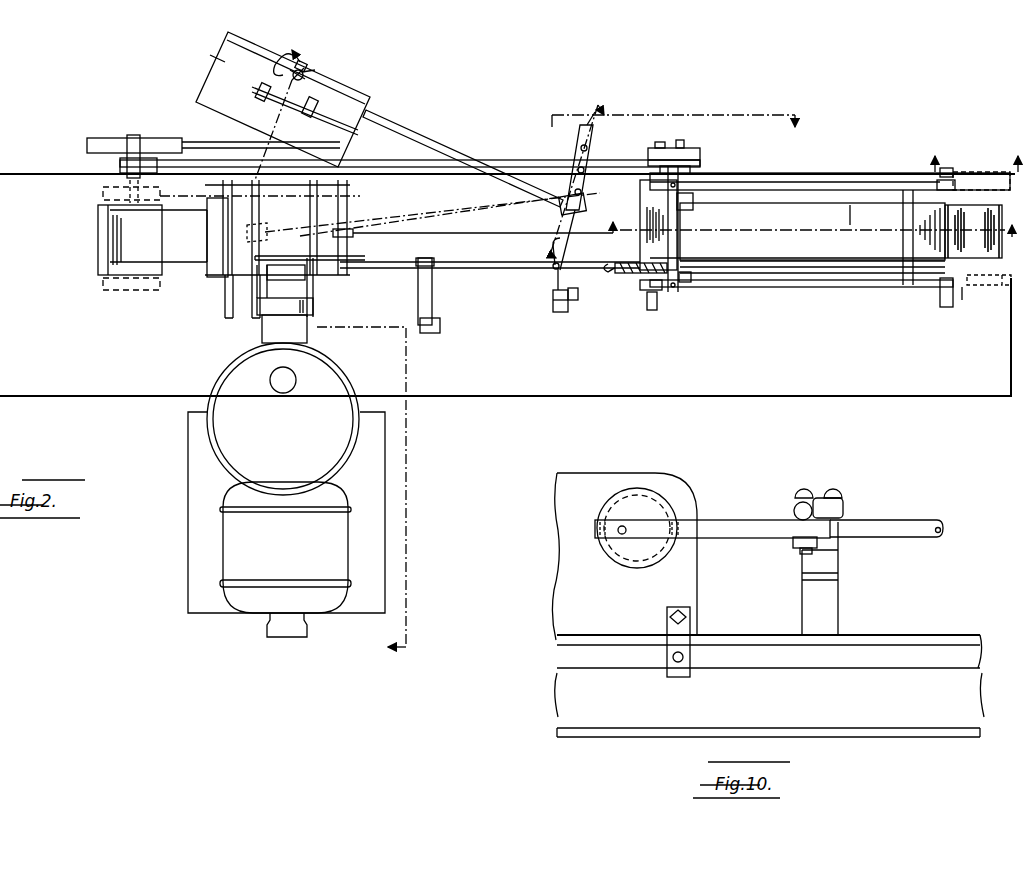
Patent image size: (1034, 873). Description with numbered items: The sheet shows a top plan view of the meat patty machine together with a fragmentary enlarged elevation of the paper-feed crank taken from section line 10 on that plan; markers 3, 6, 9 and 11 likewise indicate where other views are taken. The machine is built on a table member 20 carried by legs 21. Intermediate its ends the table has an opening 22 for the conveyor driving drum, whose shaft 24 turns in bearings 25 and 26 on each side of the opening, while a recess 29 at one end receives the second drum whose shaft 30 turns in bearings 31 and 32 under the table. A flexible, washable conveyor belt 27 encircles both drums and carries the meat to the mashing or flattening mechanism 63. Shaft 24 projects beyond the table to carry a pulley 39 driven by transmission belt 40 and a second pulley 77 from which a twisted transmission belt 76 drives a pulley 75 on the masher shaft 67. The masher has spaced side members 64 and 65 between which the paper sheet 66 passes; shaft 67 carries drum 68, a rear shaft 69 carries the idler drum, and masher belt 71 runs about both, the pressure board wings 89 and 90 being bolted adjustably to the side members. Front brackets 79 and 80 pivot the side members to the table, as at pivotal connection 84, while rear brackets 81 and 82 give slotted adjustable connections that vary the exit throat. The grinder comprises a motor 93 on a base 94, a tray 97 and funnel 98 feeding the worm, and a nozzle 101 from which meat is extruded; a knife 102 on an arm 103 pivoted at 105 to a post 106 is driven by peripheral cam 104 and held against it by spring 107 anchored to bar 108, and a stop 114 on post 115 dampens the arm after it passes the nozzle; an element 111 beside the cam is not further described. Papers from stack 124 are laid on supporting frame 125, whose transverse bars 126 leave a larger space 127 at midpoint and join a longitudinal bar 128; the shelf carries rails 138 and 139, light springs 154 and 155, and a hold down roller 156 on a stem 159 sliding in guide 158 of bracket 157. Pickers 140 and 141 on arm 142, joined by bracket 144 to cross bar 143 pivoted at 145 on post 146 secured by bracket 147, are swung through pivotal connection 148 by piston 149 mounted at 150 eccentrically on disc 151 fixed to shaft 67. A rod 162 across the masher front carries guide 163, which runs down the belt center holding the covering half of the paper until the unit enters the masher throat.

In FIG. 2, the section line 3- 3 is at (358, 348).
In FIG. 2, the section line 6- 6 is at (811, 238).
In FIG. 2, the section line 9- 9 is at (974, 154).
In FIG. 2, the section line 10— 10 is at (670, 109).
In FIG. 2, the section line 11- 11 is at (572, 181).
In FIG. 2, the table member 20 is at (700, 388).
In FIG. 10, the table member 20 is at (818, 668).
In FIG. 10, the legs 21 is at (912, 712).
In FIG. 2, the opening 22 is at (98, 268).
In FIG. 2, the shaft 24 is at (140, 190).
In FIG. 2, the bearing 25 is at (103, 195).
In FIG. 2, the bearing 26 is at (105, 290).
In FIG. 2, the conveyor belt 27 is at (182, 255).
In FIG. 2, the recess 29 is at (1011, 280).
In FIG. 2, the shaft 30 is at (966, 301).
In FIG. 2, the bearing 31 is at (981, 172).
In FIG. 2, the bearing 32 is at (985, 285).
In FIG. 2, the pulley 39 is at (160, 138).
In FIG. 2, the transmission belt 40 is at (220, 142).
In FIG. 2, the mashing or flattening mechanism 63 is at (875, 305).
In FIG. 2, the side member 64 is at (880, 176).
In FIG. 10, the side member 64 is at (697, 588).
In FIG. 2, the side member 65 is at (830, 287).
In FIG. 2, the paper sheet 66 is at (350, 205).
In FIG. 2, the shaft 67 is at (690, 172).
In FIG. 2, the drum or pulley 68 is at (690, 205).
In FIG. 2, the shaft 69 is at (903, 205).
In FIG. 2, the masher belt 71 is at (812, 231).
In FIG. 2, the pulley 75 is at (700, 158).
In FIG. 2, the transmission belt 76 is at (520, 160).
In FIG. 2, the pulley 77 is at (120, 165).
In FIG. 2, the bracket 79 is at (652, 310).
In FIG. 10, the bracket 80 is at (690, 633).
In FIG. 2, the bracket 81 is at (950, 168).
In FIG. 2, the bracket 82 is at (945, 307).
In FIG. 10, the pivotal connection 84 is at (667, 617).
In FIG. 2, the wing 89 is at (850, 225).
In FIG. 2, the wing 90 is at (830, 258).
In FIG. 2, the motor 93 is at (250, 605).
In FIG. 2, the base 94 is at (207, 613).
In FIG. 2, the tray 97 is at (330, 380).
In FIG. 2, the funnel or sleeve 98 is at (283, 393).
In FIG. 2, the nozzle 101 is at (277, 290).
In FIG. 2, the knife 102 is at (355, 258).
In FIG. 2, the arm 103 is at (503, 268).
In FIG. 2, the peripheral cam 104 is at (688, 282).
In FIG. 2, the pivot 105 is at (573, 249).
In FIG. 2, the post or bracket 106 is at (553, 295).
In FIG. 2, the spring 107 is at (640, 285).
In FIG. 2, the bar 108 is at (678, 245).
In FIG. 2, the rail 111 is at (705, 272).
In FIG. 2, the stop 114 is at (432, 302).
In FIG. 2, the post 115 is at (430, 333).
In FIG. 2, the stack 124 is at (355, 120).
In FIG. 2, the supporting frame 125 is at (205, 310).
In FIG. 2, the transverse bars 126 is at (313, 282).
In FIG. 2, the opening or space 127 is at (300, 112).
In FIG. 2, the longitudinal bar 128 is at (243, 312).
In FIG. 2, the rail 138 is at (356, 88).
In FIG. 2, the second rail 139 is at (212, 55).
In FIG. 2, the picker 140 is at (275, 70).
In FIG. 2, the picker 141 is at (318, 103).
In FIG. 2, the arm 142 is at (440, 140).
In FIG. 10, the arm 142 is at (920, 520).
In FIG. 2, the cross member 143 is at (585, 200).
In FIG. 10, the cross member 143 is at (843, 508).
In FIG. 2, the bracket 144 is at (568, 165).
In FIG. 2, the pivot 145 is at (598, 150).
In FIG. 10, the pivot 145 is at (832, 489).
In FIG. 10, the post 146 is at (838, 560).
In FIG. 10, the bracket 147 is at (838, 605).
In FIG. 2, the pivotal connection 148 is at (601, 108).
In FIG. 10, the pivotal connection 148 is at (800, 489).
In FIG. 2, the piston 149 is at (668, 133).
In FIG. 10, the piston 149 is at (758, 505).
In FIG. 2, the eccentric mounting 150 is at (684, 142).
In FIG. 10, the eccentric mounting 150 is at (622, 534).
In FIG. 2, the disc 151 is at (700, 162).
In FIG. 10, the disc 151 is at (645, 560).
In FIG. 2, the light spring 154 is at (265, 100).
In FIG. 2, the light spring 155 is at (328, 120).
In FIG. 2, the hold down roller 156 is at (290, 48).
In FIG. 2, the bracket 157 is at (308, 64).
In FIG. 2, the guide 158 is at (302, 82).
In FIG. 2, the stem 159 is at (315, 70).
In FIG. 2, the rod 162 is at (622, 273).
In FIG. 2, the guide or paper hold down member 163 is at (472, 236).